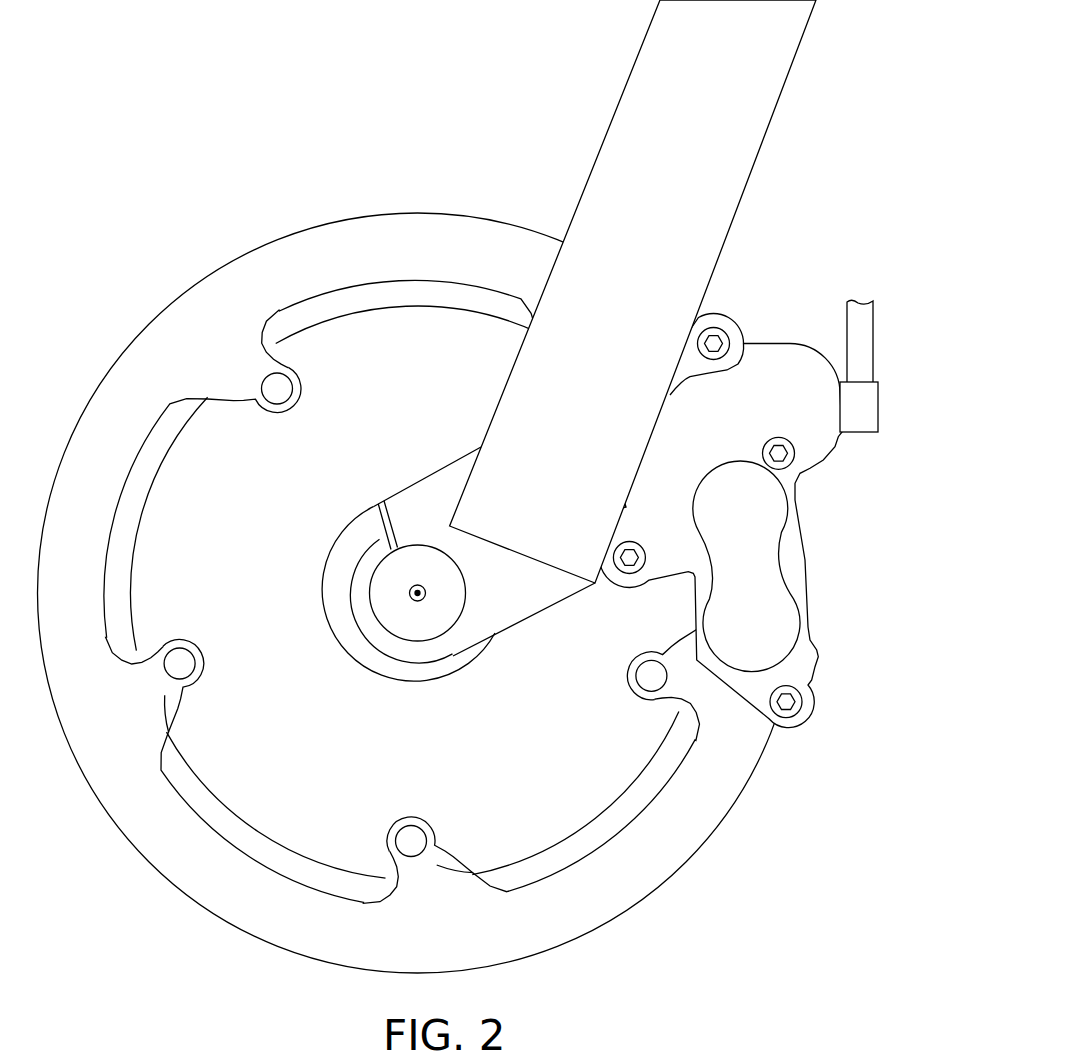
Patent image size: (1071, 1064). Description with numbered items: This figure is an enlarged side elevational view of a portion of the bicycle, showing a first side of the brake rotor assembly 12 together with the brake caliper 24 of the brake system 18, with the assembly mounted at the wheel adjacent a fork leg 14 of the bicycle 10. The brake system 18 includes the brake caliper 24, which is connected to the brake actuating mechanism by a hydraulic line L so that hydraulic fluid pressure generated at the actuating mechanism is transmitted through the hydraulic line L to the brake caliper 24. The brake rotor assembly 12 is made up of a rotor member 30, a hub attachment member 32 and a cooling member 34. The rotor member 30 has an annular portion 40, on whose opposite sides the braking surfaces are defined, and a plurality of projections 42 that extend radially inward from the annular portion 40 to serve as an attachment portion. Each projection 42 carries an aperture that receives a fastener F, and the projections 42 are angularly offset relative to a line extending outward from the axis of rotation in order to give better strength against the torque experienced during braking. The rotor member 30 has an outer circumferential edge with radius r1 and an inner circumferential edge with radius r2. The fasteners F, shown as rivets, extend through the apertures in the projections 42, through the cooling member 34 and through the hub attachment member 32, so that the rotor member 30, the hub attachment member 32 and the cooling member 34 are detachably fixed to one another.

The brake assembly 10 is at (475, 486).
The brake rotor assembly 12 is at (418, 593).
The fork leg 14 is at (668, 107).
The brake system 18 is at (755, 498).
The brake caliper 24 is at (757, 620).
The rotor member 30 is at (168, 888).
The hub attachment member 32 is at (433, 678).
The cooling member 34 is at (573, 783).
The annular portion 40 is at (242, 905).
The projections 42 is at (283, 355).
The fastener F is at (277, 390).
The hydraulic line L is at (858, 333).
The radius of outer circumferential edge r1 is at (418, 593).
The radius of inner circumferential edge r2 is at (418, 593).